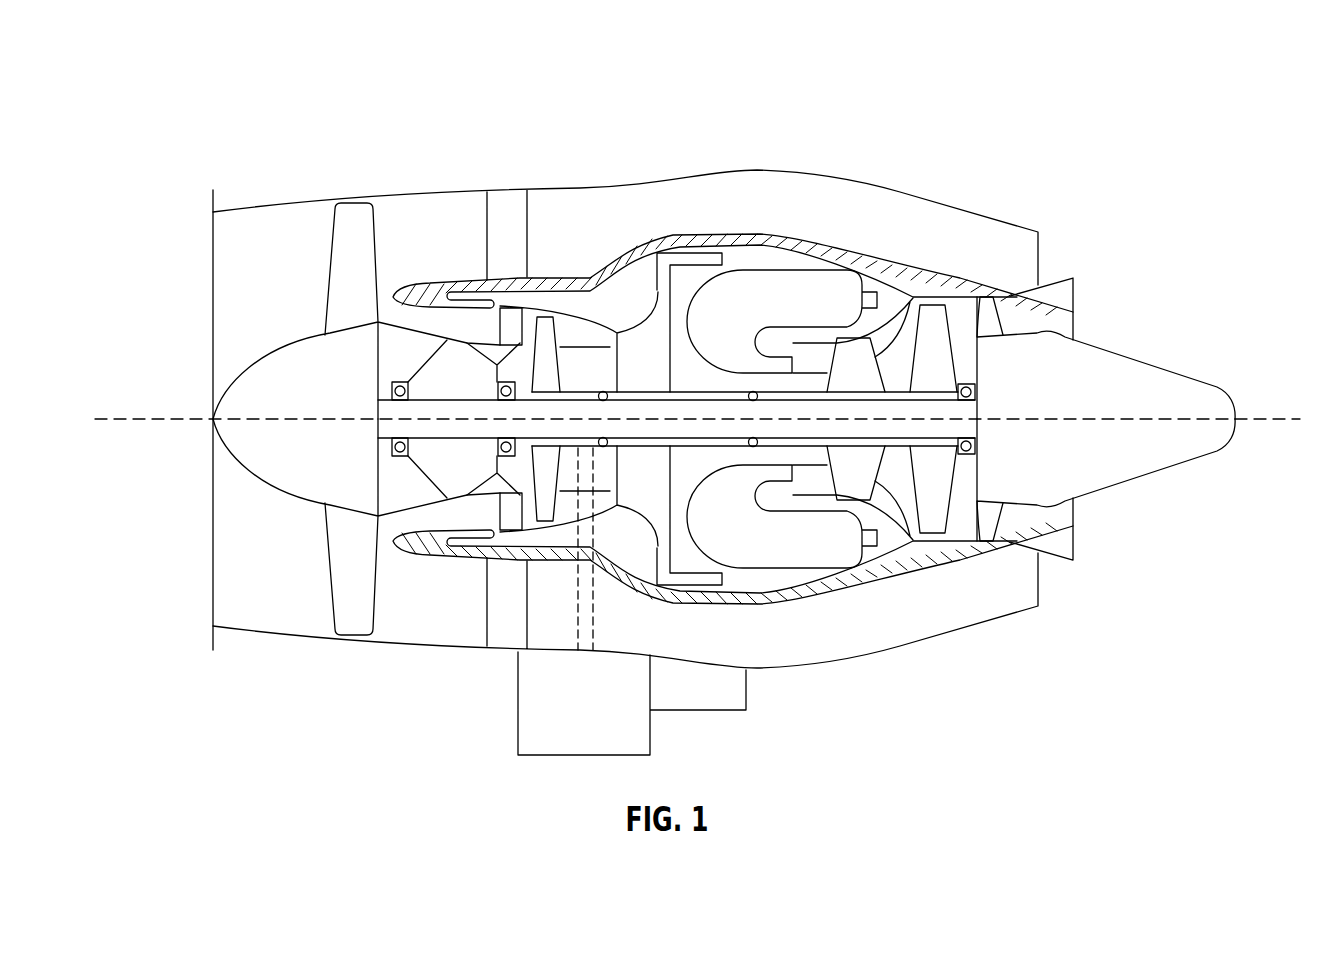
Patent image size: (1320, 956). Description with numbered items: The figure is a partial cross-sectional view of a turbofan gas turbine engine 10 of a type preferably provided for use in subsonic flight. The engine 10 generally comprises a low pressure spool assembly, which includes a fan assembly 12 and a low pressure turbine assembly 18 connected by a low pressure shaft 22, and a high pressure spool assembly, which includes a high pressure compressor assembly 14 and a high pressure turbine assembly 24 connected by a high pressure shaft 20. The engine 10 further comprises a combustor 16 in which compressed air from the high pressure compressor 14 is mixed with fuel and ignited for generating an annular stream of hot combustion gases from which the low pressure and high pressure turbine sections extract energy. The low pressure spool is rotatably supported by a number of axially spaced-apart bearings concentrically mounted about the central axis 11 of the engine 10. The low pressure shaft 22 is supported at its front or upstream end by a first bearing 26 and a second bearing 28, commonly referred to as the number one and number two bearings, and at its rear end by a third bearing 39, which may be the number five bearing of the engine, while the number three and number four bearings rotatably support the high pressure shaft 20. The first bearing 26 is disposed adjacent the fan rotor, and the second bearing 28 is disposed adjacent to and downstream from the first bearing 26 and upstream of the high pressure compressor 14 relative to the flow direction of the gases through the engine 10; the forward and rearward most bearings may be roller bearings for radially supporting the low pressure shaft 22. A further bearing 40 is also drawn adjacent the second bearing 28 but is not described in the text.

The turbofan gas turbine engine 10 is at (892, 75).
The central axis 11 is at (1268, 408).
The fan assembly 12 is at (347, 563).
The high pressure compressor assembly 14 is at (643, 353).
The combustor 16 is at (770, 295).
The low pressure turbine assembly 18 is at (928, 522).
The high pressure shaft 20 is at (580, 390).
The low pressure shaft 22 is at (460, 442).
The high pressure turbine assembly 24 is at (905, 532).
The first bearing 26 is at (399, 372).
The second bearing 28 is at (513, 488).
The third bearing 39 is at (967, 382).
The bearing 40 is at (494, 350).